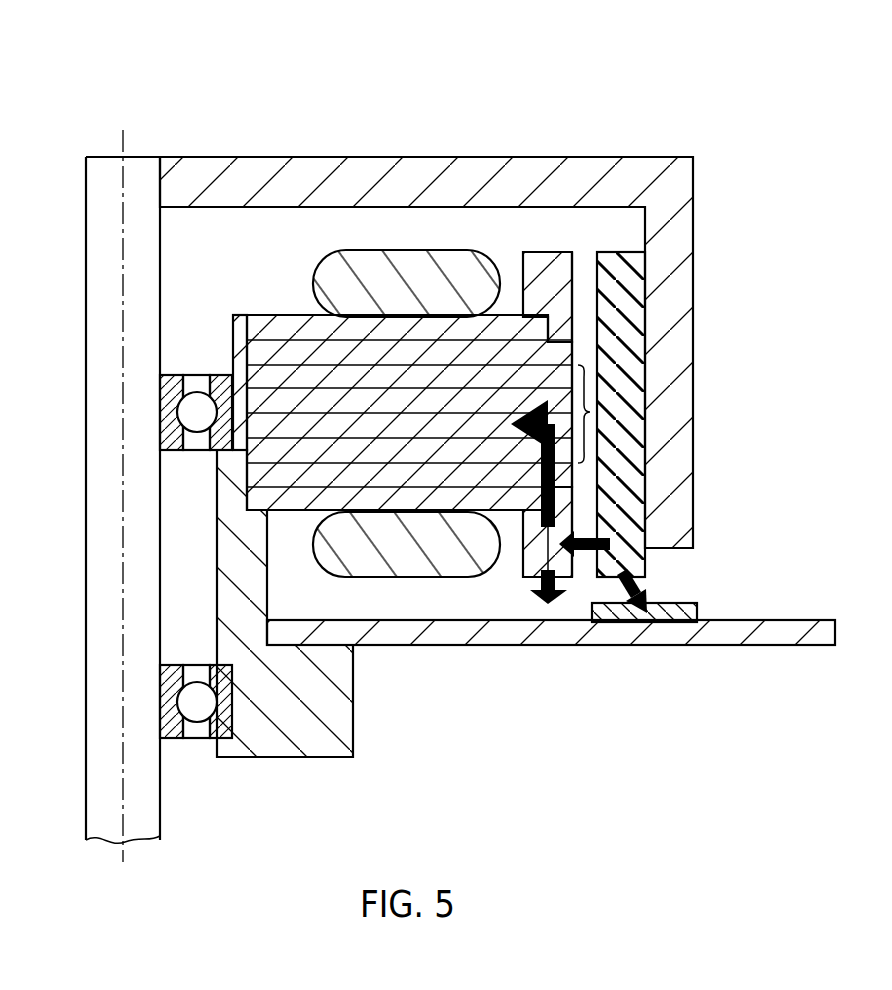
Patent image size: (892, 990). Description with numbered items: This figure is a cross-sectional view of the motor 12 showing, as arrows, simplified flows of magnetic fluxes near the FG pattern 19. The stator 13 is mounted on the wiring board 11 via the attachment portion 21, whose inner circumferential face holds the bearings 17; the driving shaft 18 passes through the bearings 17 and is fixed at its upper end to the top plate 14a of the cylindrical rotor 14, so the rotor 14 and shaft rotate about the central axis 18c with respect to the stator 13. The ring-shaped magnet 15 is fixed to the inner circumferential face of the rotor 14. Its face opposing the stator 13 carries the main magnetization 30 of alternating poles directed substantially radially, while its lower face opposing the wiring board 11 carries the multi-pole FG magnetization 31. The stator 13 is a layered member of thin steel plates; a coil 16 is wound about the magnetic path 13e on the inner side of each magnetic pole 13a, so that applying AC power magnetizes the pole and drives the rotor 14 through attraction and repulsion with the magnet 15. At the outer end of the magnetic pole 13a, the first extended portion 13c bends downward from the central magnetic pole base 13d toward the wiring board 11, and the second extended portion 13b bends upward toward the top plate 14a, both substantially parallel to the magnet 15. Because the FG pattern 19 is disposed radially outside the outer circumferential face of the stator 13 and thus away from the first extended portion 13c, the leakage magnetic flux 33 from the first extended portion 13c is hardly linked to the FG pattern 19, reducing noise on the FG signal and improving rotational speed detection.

The wiring board 11 is at (763, 646).
The motor 12 is at (95, 73).
The stator 13 is at (487, 410).
The magnetic pole 13a is at (521, 512).
The second extended portion 13b is at (560, 264).
The first extended portion 13c is at (597, 487).
The magnetic pole base 13d is at (590, 412).
The magnetic path 13e is at (380, 400).
The rotor 14 is at (465, 321).
The top plate 14a is at (452, 168).
The magnet 15 is at (628, 294).
The coil 16 is at (380, 260).
The bearings 17 is at (167, 417).
The driving shaft 18 is at (87, 478).
The central axis 18c is at (123, 228).
The FG pattern 19 is at (657, 616).
The attachment portion 21 is at (303, 750).
The main magnetization 30 is at (600, 528).
The FG magnetization 31 is at (613, 590).
The leakage magnetic flux 33 is at (535, 595).